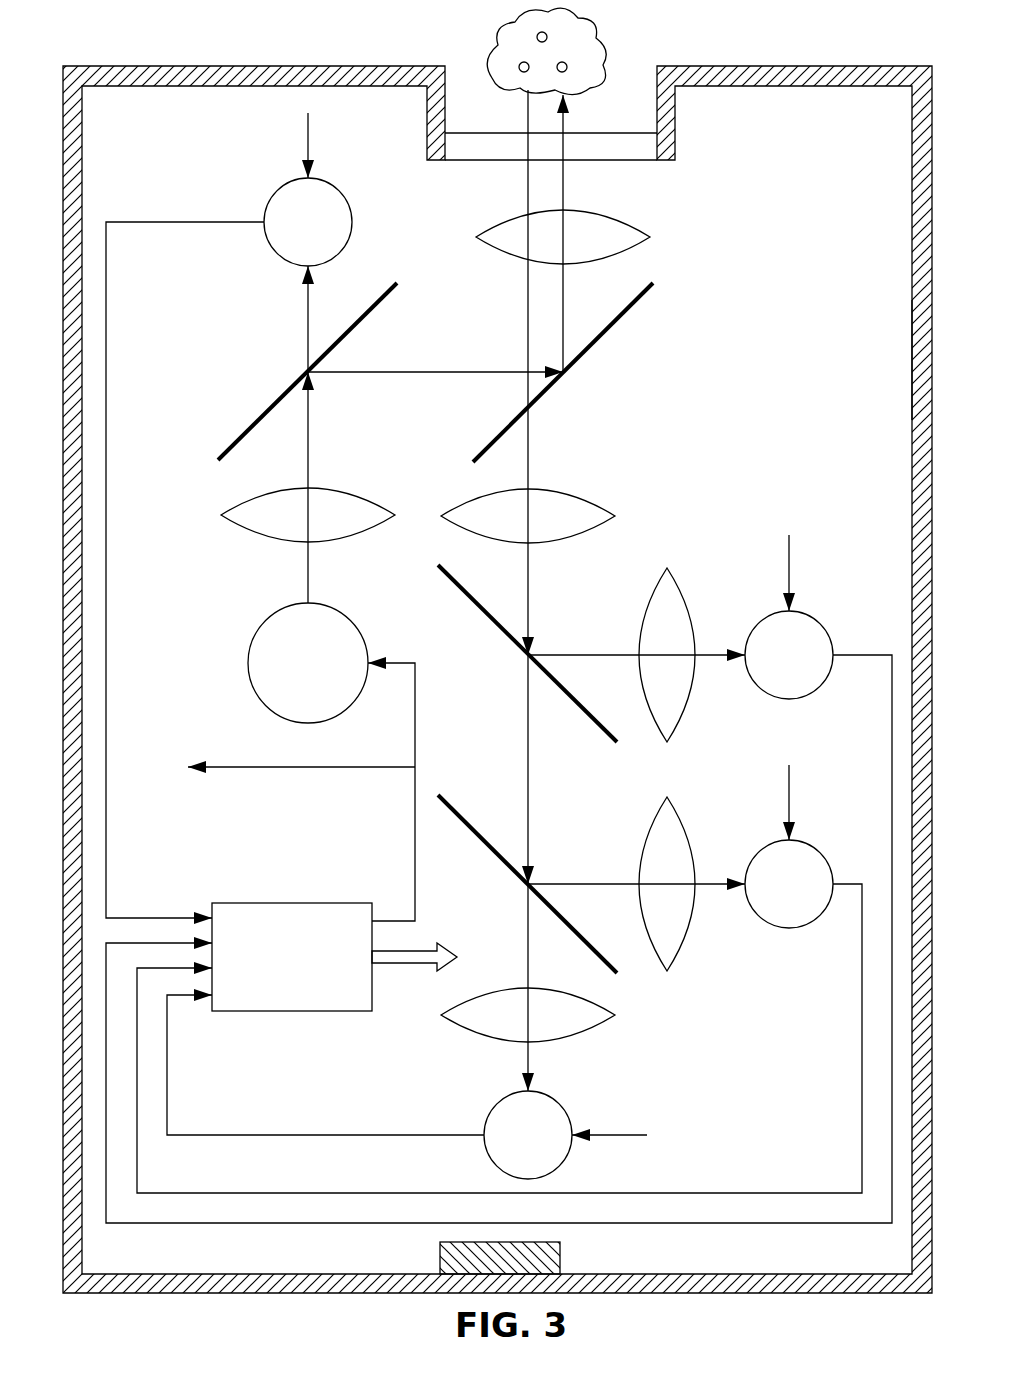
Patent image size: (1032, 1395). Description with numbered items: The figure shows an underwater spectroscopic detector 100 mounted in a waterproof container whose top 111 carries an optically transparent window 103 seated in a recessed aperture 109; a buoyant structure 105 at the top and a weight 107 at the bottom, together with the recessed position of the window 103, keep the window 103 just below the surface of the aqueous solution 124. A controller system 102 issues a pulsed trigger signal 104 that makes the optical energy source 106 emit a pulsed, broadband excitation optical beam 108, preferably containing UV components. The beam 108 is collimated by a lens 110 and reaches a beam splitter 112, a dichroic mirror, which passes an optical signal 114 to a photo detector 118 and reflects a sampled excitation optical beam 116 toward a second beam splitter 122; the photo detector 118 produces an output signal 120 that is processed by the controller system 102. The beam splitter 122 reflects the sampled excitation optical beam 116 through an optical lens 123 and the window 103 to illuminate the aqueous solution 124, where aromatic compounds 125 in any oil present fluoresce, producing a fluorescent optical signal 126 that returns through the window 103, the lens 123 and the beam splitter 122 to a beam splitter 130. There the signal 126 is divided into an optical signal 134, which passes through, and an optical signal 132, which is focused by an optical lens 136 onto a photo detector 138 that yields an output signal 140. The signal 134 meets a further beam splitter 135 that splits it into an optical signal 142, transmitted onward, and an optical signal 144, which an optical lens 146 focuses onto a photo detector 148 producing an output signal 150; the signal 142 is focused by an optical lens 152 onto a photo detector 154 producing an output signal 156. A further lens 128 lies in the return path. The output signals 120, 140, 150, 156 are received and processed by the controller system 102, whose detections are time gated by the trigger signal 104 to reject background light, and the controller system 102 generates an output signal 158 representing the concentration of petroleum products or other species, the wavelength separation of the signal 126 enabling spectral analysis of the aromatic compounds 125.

The underwater spectroscopic detector 100 is at (808, 46).
The controller system 102 is at (230, 903).
The optically transparent window 103 is at (642, 157).
The pulsed trigger signal 104 is at (308, 130).
The buoyant structure 105 is at (912, 352).
The optical energy source 106 is at (248, 665).
The weight 107 is at (560, 1258).
The excitation optical beam 108 is at (308, 578).
The recessed aperture 109 is at (640, 124).
The lens 110 is at (240, 525).
The top of the container 111 is at (166, 66).
The beam splitter 112 is at (247, 432).
The optical signal 114 is at (308, 325).
The sampled excitation optical beam 116 is at (565, 191).
The photo detector 118 is at (352, 214).
The output signal 120 is at (106, 378).
The beam splitter 122 is at (612, 331).
The optical lens 123 is at (650, 238).
The aqueous solution 124 is at (590, 28).
The aromatic compounds 125 is at (557, 66).
The fluorescent optical signal 126 is at (528, 190).
The collecting lens 128 is at (588, 505).
The beam splitter 130 is at (463, 592).
The optical signal 132 is at (580, 652).
The optical signal 134 is at (528, 750).
The beam splitter 135 is at (470, 830).
The optical lens 136 is at (677, 598).
The photo detector 138 is at (779, 698).
The output signal 140 is at (892, 742).
The optical signal 142 is at (528, 930).
The optical signal 144 is at (581, 882).
The optical lens 146 is at (672, 808).
The photo detector 148 is at (789, 928).
The output signal 150 is at (862, 1038).
The optical lens 152 is at (585, 1028).
The photo detector 154 is at (493, 1108).
The output signal 156 is at (311, 1133).
The output signal 158 is at (407, 968).